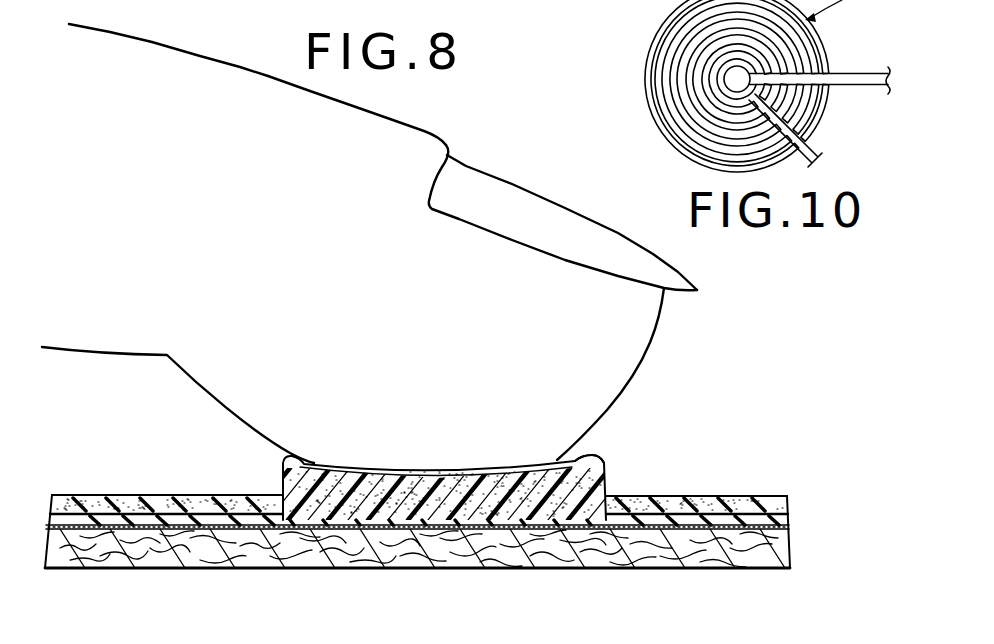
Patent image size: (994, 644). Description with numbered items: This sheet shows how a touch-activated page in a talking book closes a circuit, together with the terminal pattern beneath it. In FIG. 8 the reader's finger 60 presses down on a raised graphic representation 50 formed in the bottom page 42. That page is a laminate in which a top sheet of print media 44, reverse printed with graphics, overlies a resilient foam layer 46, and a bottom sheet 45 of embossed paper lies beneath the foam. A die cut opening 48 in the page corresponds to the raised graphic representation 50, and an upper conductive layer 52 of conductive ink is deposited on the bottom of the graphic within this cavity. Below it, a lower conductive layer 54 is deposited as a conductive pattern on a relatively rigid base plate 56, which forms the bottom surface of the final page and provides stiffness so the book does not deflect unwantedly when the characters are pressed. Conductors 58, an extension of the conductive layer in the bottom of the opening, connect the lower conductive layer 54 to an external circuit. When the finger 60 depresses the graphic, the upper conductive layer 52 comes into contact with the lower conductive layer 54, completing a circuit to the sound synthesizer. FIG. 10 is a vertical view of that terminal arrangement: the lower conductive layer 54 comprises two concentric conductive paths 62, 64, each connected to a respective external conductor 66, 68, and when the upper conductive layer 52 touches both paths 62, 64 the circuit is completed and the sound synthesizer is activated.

In FIG. 8, the bottom page 42 is at (417, 514).
In FIG. 8, the print media layer 44 is at (718, 501).
In FIG. 8, the bottom sheet 45 is at (200, 499).
In FIG. 8, the resilient foam layer 46 is at (585, 462).
In FIG. 8, the die cut opening 48 is at (291, 516).
In FIG. 8, the graphic representation 50 is at (457, 457).
In FIG. 8, the upper conductive layer 52 is at (540, 528).
In FIG. 8, the lower conductive layer 54 is at (470, 531).
In FIG. 8, the base plate 56 is at (337, 556).
In FIG. 8, the conductors 58 is at (169, 533).
In FIG. 8, the reader's finger 60 is at (440, 124).
In FIG. 10, the concentric conductive path 62 is at (665, 96).
In FIG. 10, the concentric conductive path 64 is at (667, 75).
In FIG. 10, the external conductor 66 is at (814, 149).
In FIG. 10, the external conductor 68 is at (856, 77).